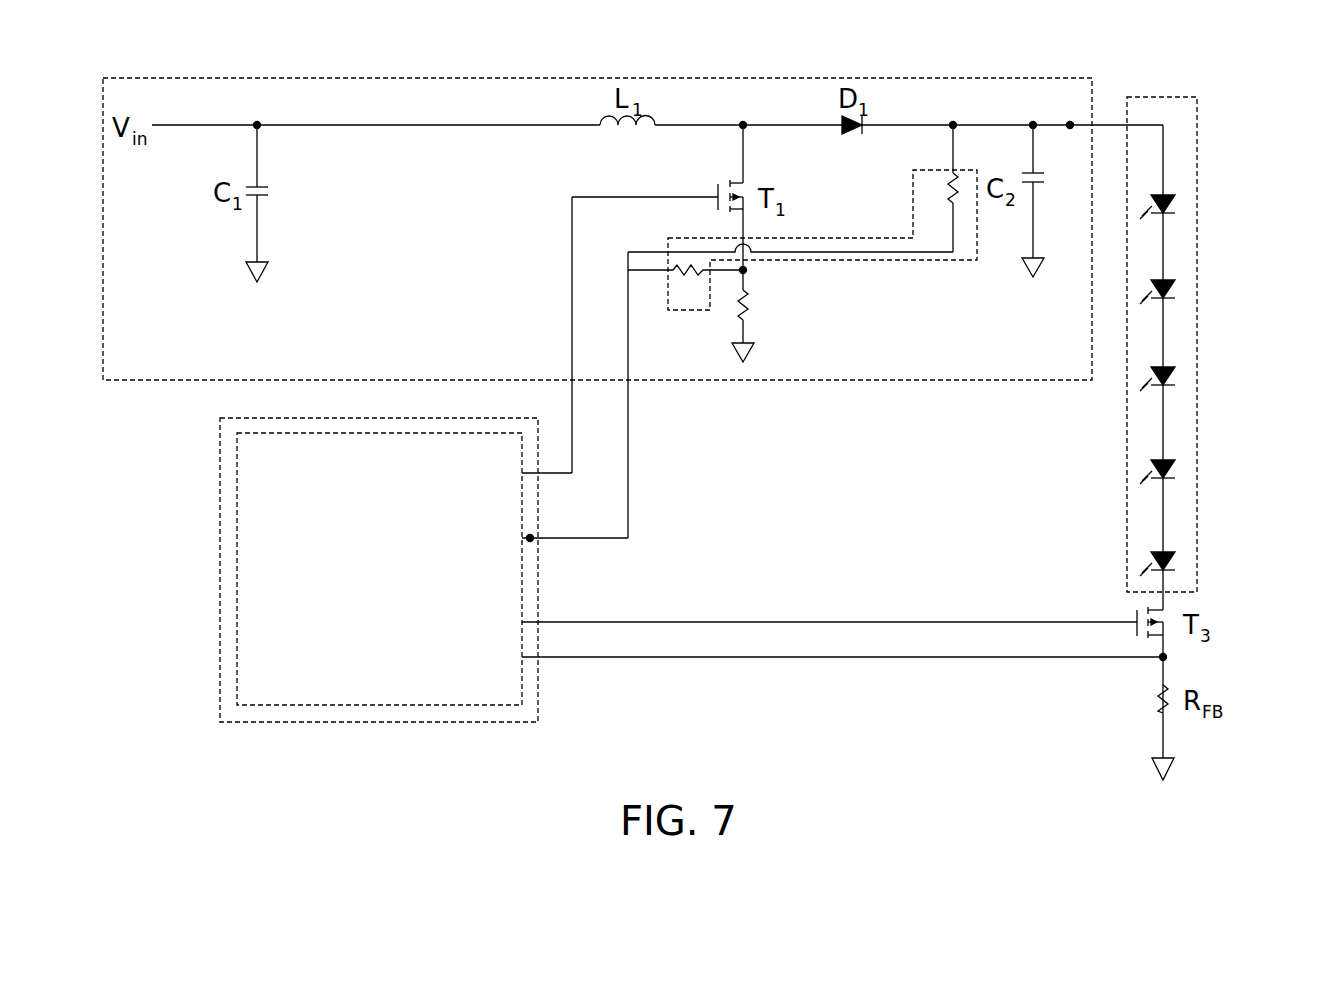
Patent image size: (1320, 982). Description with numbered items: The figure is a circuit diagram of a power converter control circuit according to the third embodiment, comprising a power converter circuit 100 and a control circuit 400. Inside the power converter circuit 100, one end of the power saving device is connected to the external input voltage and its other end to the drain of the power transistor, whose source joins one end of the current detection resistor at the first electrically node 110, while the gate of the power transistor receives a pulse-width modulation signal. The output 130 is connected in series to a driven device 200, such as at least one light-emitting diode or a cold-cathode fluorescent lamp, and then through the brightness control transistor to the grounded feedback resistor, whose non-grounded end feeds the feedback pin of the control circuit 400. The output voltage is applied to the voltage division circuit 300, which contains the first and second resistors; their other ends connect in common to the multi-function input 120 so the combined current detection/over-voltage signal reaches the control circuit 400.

The power converter circuit 100 is at (490, 78).
The first electrically node 110 is at (748, 272).
The multi-function input 120 is at (533, 541).
The output 130 is at (1068, 122).
The driven device 200 is at (1197, 155).
The voltage division circuit 300 is at (935, 262).
The control circuit 400 is at (220, 580).